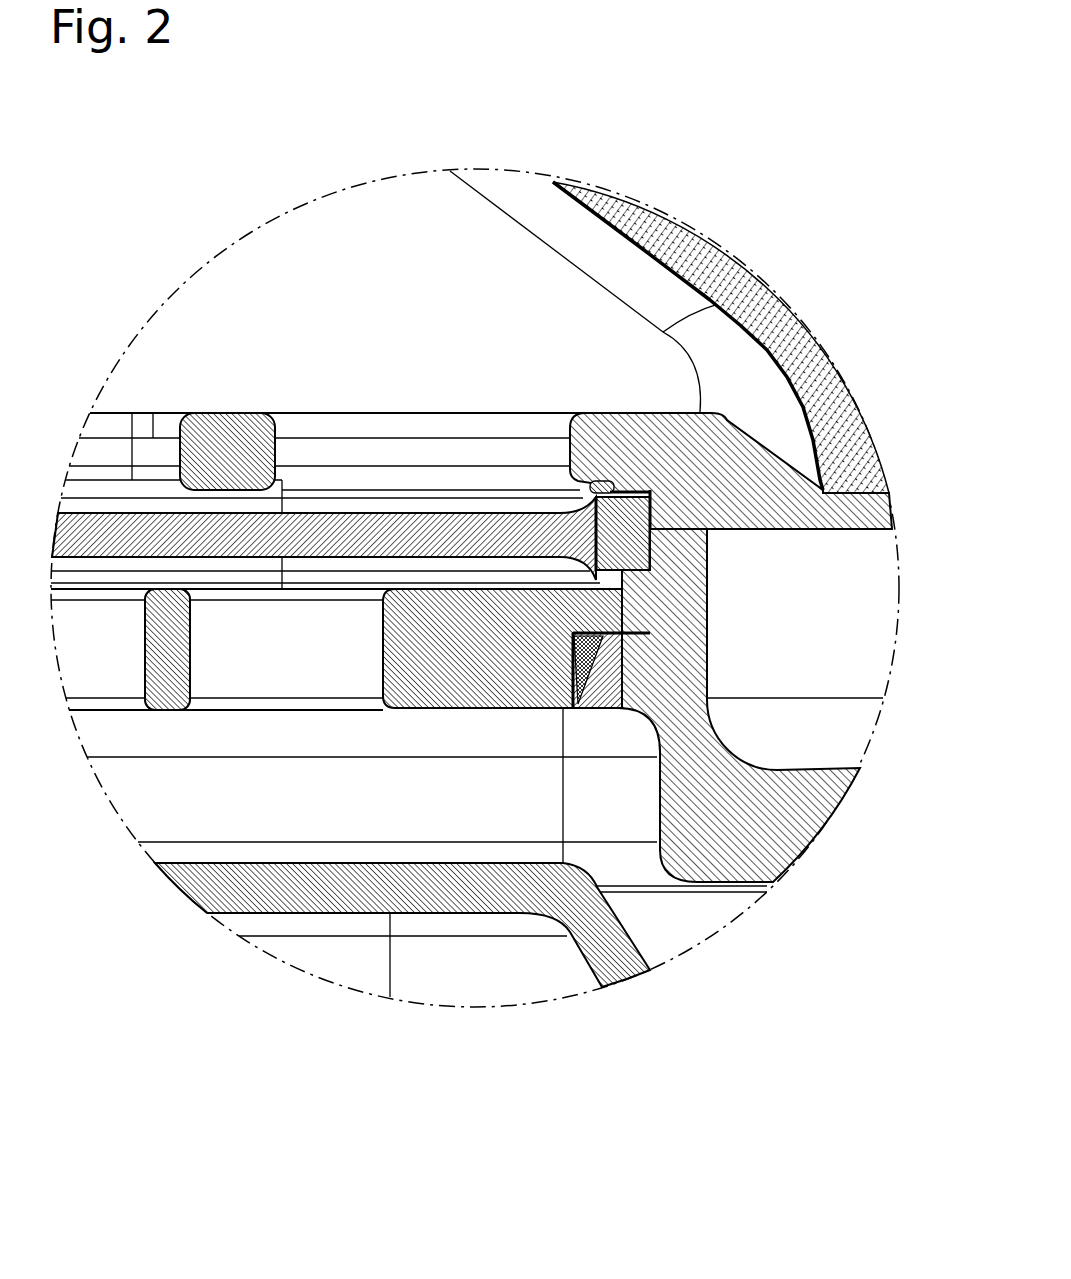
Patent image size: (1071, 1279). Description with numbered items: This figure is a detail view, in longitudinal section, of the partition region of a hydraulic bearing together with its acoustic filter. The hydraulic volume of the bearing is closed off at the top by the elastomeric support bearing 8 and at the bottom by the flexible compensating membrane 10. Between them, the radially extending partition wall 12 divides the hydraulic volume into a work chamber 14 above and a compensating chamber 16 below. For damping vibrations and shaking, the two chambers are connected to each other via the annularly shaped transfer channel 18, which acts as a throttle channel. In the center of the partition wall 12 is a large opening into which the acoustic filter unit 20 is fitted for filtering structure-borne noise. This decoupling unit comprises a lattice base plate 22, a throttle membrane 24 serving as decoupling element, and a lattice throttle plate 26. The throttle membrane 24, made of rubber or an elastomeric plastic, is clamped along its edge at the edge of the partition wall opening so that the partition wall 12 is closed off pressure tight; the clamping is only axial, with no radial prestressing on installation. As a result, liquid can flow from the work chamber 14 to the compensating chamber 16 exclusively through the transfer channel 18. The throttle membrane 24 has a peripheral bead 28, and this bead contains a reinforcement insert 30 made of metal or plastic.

The support bearing 8 is at (778, 328).
The compensating membrane 10 is at (460, 888).
The partition wall 12 is at (740, 823).
The work chamber 14 is at (403, 315).
The compensating chamber 16 is at (428, 811).
The transfer channel 18 is at (803, 622).
The acoustic filter unit 20 is at (359, 388).
The lattice base plate 22 is at (449, 661).
The throttle membrane 24 is at (183, 533).
The lattice throttle plate 26 is at (252, 460).
The peripheral bead 28 is at (615, 707).
The reinforcement insert 30 is at (633, 533).